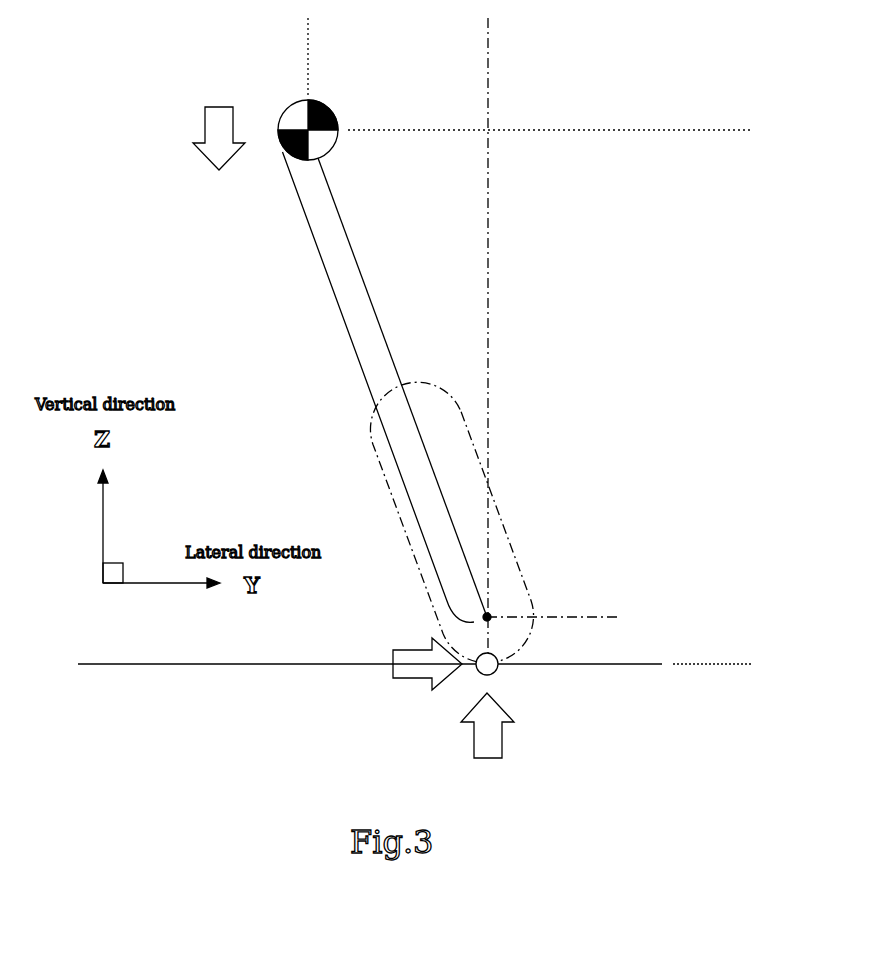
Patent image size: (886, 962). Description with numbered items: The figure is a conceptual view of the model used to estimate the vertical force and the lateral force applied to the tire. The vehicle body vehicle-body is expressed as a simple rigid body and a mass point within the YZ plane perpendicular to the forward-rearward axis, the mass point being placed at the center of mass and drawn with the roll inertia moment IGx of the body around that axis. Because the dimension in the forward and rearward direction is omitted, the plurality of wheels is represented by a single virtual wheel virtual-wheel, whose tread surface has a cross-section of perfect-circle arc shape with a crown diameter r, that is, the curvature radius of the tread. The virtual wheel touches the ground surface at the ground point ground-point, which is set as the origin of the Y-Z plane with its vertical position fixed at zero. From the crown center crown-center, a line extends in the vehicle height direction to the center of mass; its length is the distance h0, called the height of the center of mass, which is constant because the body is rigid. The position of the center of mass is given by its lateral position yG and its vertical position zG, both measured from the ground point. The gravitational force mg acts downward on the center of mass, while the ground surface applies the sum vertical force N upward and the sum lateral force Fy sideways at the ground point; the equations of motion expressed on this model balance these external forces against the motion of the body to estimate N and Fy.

The lateral position of the center of mass yG is at (488, 31).
The vertical position of the center of mass zG is at (740, 664).
The roll inertia moment of the vehicle body IGx is at (300, 105).
The gravitational force mg is at (186, 138).
The height of the center of mass h0 is at (378, 403).
The crown diameter r is at (590, 617).
The sum lateral force Fy is at (421, 684).
The sum vertical force N is at (487, 749).
The vehicle body vehicle-body is at (373, 307).
The virtual wheel virtual-wheel is at (500, 516).
The crown center crown-center is at (489, 615).
The ground point of the tire ground-point is at (496, 673).